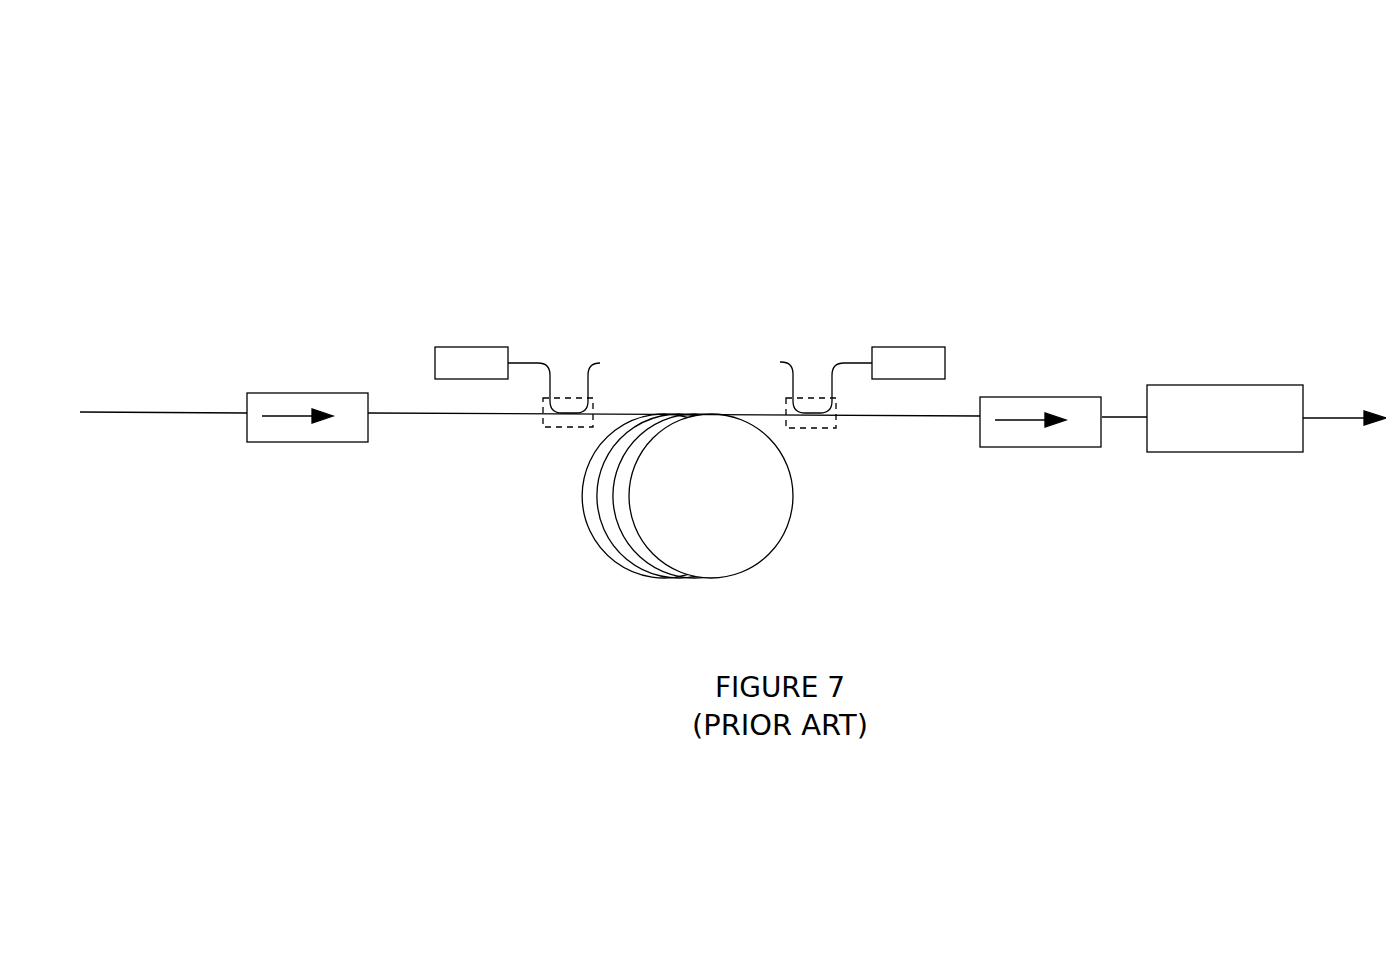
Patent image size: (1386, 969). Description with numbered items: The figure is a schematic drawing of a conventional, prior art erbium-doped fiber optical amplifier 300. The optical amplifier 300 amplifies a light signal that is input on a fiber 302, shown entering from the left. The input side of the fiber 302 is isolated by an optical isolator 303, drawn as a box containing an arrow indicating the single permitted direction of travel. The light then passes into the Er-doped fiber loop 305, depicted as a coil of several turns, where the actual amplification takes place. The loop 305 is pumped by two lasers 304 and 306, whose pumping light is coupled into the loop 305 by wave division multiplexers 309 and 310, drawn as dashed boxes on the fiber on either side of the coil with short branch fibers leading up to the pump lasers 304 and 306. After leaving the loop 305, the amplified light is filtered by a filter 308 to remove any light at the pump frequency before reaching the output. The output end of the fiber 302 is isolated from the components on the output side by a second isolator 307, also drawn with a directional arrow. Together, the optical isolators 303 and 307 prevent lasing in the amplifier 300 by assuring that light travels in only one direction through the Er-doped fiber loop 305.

The optical amplifier 300 is at (240, 114).
The fiber 302 is at (137, 412).
The optical isolator 303 is at (343, 402).
The laser 304 is at (457, 356).
The Er-doped fiber loop 305 is at (780, 485).
The laser 306 is at (888, 360).
The isolator 307 is at (1063, 410).
The filter 308 is at (1263, 452).
The wave division multiplexer 309 is at (562, 420).
The wave division multiplexer 310 is at (825, 423).